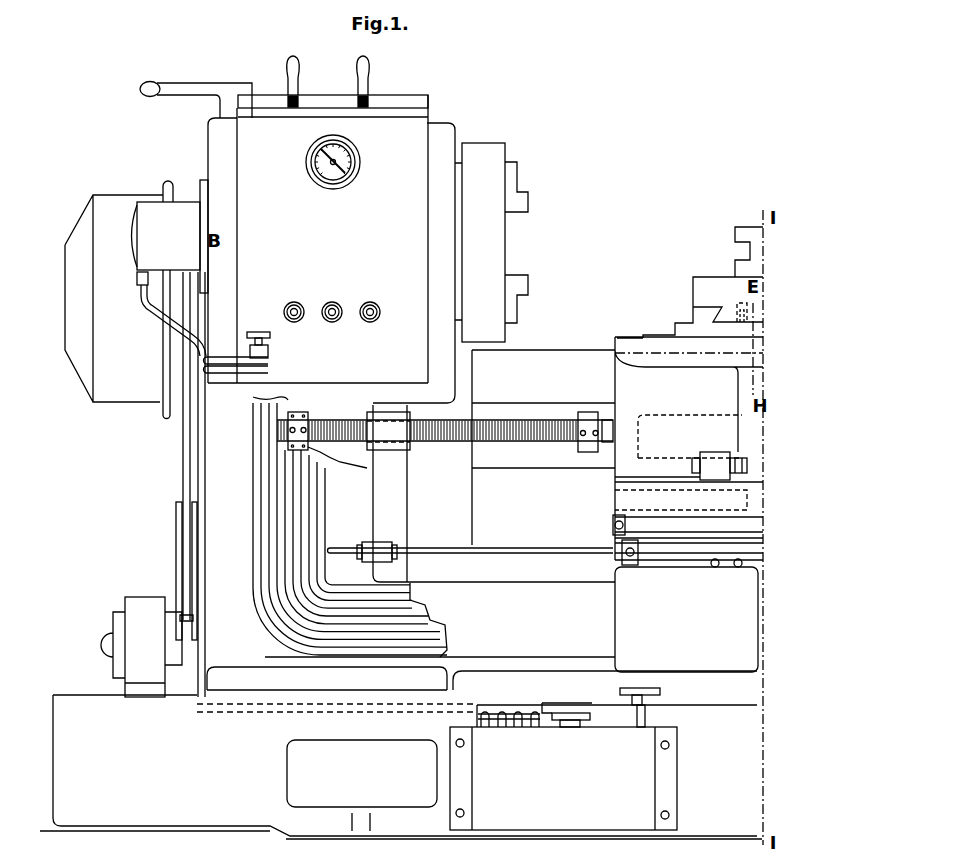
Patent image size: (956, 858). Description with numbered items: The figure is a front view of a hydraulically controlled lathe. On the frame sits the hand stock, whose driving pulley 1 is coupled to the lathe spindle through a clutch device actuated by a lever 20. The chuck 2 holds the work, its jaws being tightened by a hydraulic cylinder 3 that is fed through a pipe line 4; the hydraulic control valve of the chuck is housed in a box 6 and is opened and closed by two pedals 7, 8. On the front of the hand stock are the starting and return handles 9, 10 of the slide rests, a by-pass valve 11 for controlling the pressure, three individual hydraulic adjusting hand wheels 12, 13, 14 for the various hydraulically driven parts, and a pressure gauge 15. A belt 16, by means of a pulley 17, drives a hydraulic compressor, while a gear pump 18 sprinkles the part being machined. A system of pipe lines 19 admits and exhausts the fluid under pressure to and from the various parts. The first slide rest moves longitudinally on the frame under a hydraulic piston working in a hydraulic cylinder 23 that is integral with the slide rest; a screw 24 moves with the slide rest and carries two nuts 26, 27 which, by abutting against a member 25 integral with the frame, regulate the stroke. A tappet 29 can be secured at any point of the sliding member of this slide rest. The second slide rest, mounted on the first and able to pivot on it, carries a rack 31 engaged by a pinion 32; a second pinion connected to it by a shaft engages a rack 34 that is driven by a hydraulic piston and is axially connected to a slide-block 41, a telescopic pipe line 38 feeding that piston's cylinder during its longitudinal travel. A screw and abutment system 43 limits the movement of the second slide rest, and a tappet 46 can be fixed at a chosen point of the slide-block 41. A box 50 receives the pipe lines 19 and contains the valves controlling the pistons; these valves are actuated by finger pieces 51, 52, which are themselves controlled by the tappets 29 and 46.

The driving pulley 1 is at (114, 298).
The chuck 2 is at (495, 242).
The hydraulic cylinder 3 is at (170, 236).
The pipe line 4 is at (162, 320).
The box 6 is at (563, 778).
The pedal 7 is at (563, 718).
The pedal 8 is at (661, 692).
The starting handle 9 is at (287, 62).
The return handle 10 is at (370, 63).
The by-pass valve 11 is at (259, 331).
The hydraulic adjusting hand wheel 12 is at (292, 301).
The hydraulic adjusting hand wheel 13 is at (330, 301).
The hydraulic adjusting hand wheel 14 is at (368, 301).
The pressure gauge 15 is at (358, 162).
The belt 16 is at (181, 458).
The pulley 17 is at (175, 514).
The gear pump 18 is at (141, 647).
The system of pipe lines 19 is at (300, 613).
The lever 20 is at (138, 88).
The hydraulic cylinder 23 is at (659, 415).
The screw 24 is at (463, 446).
The member 25 is at (398, 455).
The nut 26 is at (304, 414).
The nut 27 is at (582, 411).
The tappet 29 is at (620, 556).
The rack 31 is at (740, 316).
The pinion 32 is at (758, 303).
The rack 34 is at (615, 500).
The telescopic pipe line 38 is at (426, 553).
The slide-block 41 is at (665, 531).
The screw and abutment system 43 is at (719, 466).
The tappet 46 is at (611, 524).
The box 50 is at (686, 619).
The finger piece 51 is at (714, 568).
The finger piece 52 is at (741, 568).